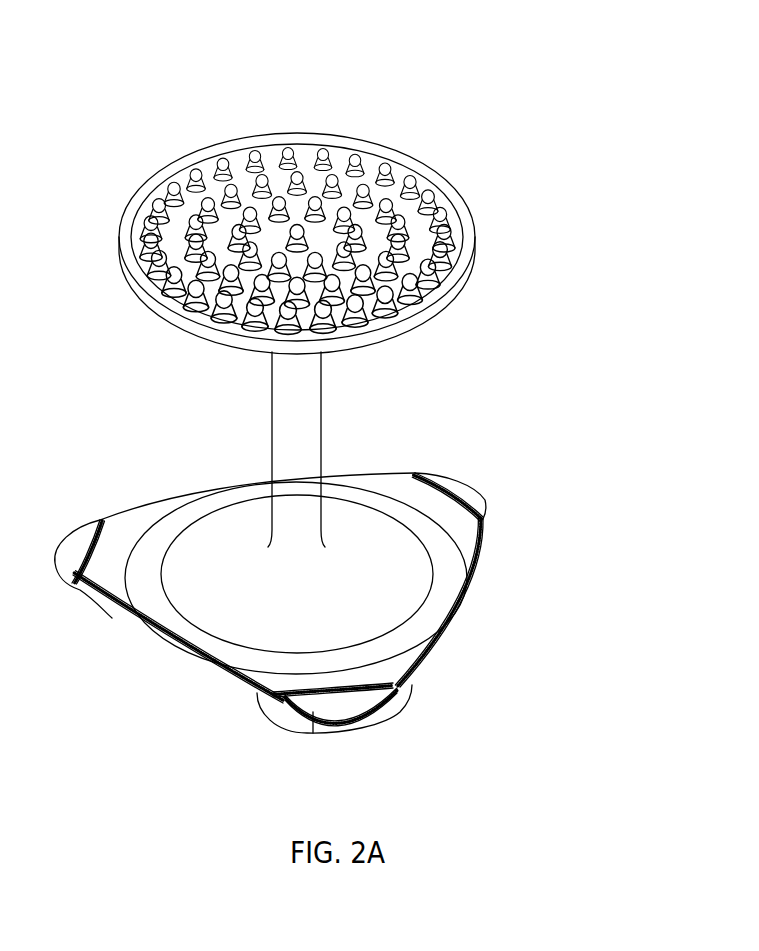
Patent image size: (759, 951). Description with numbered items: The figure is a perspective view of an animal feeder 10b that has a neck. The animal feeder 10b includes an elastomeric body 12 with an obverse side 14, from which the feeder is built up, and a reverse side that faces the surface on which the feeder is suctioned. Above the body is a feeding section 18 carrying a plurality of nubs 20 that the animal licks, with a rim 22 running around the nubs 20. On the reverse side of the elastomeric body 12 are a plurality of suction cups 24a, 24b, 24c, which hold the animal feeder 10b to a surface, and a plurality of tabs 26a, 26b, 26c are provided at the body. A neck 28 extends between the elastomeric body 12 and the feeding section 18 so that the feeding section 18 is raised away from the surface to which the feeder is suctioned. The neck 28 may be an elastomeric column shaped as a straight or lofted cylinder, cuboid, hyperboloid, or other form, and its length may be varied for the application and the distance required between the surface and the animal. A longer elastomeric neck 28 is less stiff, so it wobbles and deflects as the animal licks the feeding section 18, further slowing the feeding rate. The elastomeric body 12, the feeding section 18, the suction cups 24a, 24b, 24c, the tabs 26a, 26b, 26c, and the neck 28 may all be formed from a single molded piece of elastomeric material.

The animal feeder 10b is at (457, 73).
The elastomeric body 12 is at (181, 692).
The obverse side 14 is at (437, 600).
The feeding section 18 is at (99, 260).
The nubs 20 is at (338, 172).
The rim 22 is at (175, 325).
The suction cup 24a is at (483, 543).
The suction cup 24b is at (97, 620).
The suction cup 24c is at (288, 723).
The tab 26a is at (480, 487).
The tab 26b is at (63, 540).
The tab 26c is at (377, 710).
The neck 28 is at (341, 417).